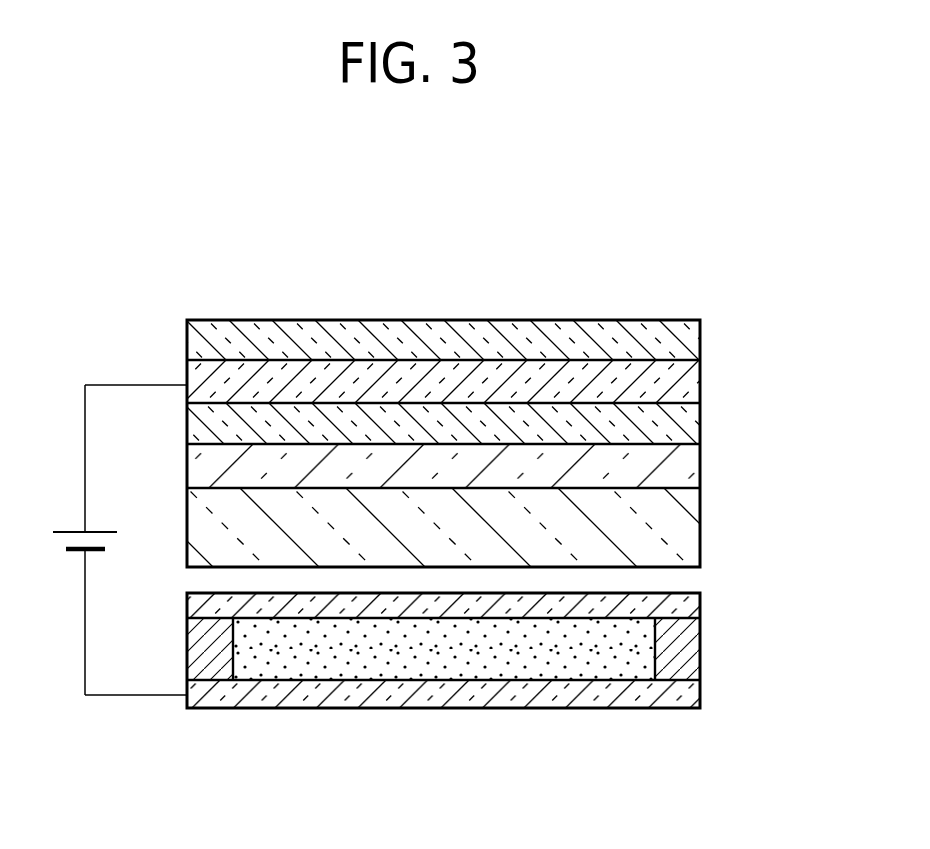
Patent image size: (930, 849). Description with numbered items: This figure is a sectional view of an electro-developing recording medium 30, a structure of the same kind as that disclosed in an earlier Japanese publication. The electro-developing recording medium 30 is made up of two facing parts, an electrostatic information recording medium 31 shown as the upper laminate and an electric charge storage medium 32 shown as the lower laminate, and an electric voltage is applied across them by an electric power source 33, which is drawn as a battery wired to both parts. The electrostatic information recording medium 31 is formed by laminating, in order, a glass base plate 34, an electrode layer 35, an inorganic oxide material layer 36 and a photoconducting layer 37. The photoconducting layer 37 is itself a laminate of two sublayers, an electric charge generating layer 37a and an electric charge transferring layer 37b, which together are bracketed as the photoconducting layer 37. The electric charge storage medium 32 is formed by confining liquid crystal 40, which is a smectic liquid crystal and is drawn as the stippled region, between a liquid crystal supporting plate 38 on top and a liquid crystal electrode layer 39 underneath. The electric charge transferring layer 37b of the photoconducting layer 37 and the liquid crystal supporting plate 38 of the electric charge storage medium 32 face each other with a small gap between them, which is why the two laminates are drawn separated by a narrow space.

The electro-developing recording medium 30 is at (419, 519).
The electrostatic information recording medium 31 is at (498, 414).
The electric charge storage medium 32 is at (443, 711).
The electric power source 33 is at (73, 557).
The glass base plate 34 is at (610, 340).
The electrode layer 35 is at (393, 382).
The inorganic oxide material layer 36 is at (692, 420).
The photoconducting layer 37 is at (499, 507).
The electric charge generating layer 37a is at (688, 462).
The electric charge transferring layer 37b is at (499, 553).
The liquid crystal supporting plate 38 is at (362, 608).
The liquid crystal electrode layer 39 is at (626, 683).
The liquid crystal 40 is at (505, 647).